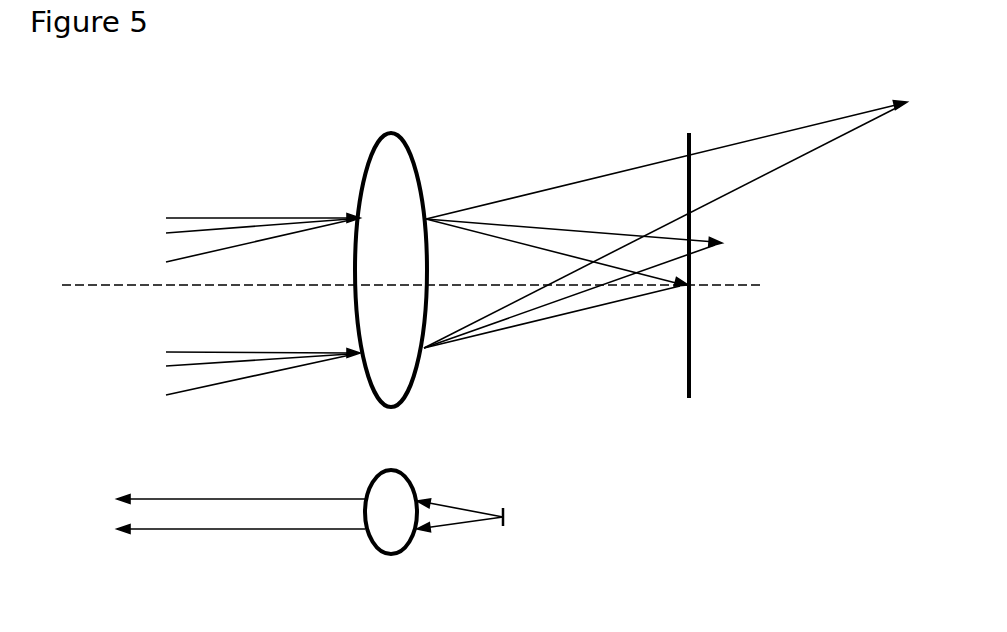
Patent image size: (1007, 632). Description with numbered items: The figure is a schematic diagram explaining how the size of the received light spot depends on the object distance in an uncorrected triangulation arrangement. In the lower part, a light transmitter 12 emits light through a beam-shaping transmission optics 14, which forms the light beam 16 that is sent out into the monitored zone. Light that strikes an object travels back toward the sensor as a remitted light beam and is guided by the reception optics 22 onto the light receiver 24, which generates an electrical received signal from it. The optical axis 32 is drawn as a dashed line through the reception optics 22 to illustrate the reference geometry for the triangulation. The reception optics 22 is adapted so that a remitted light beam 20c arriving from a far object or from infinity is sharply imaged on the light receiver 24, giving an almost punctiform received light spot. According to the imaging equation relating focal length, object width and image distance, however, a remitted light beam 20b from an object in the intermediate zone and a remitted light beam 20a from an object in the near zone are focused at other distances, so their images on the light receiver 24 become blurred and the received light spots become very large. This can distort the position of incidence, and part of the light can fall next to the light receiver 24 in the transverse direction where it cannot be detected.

The light transmitter 12 is at (507, 513).
The transmission optics 14 is at (383, 517).
The light beam 16 is at (215, 512).
The remitted light beam 20a is at (630, 293).
The remitted light beam from the intermediate zone 20b is at (657, 255).
The remitted light beam from infinity 20c is at (750, 152).
The reception optics 22 is at (395, 168).
The light receiver 24 is at (692, 385).
The optical axis 32 is at (162, 287).